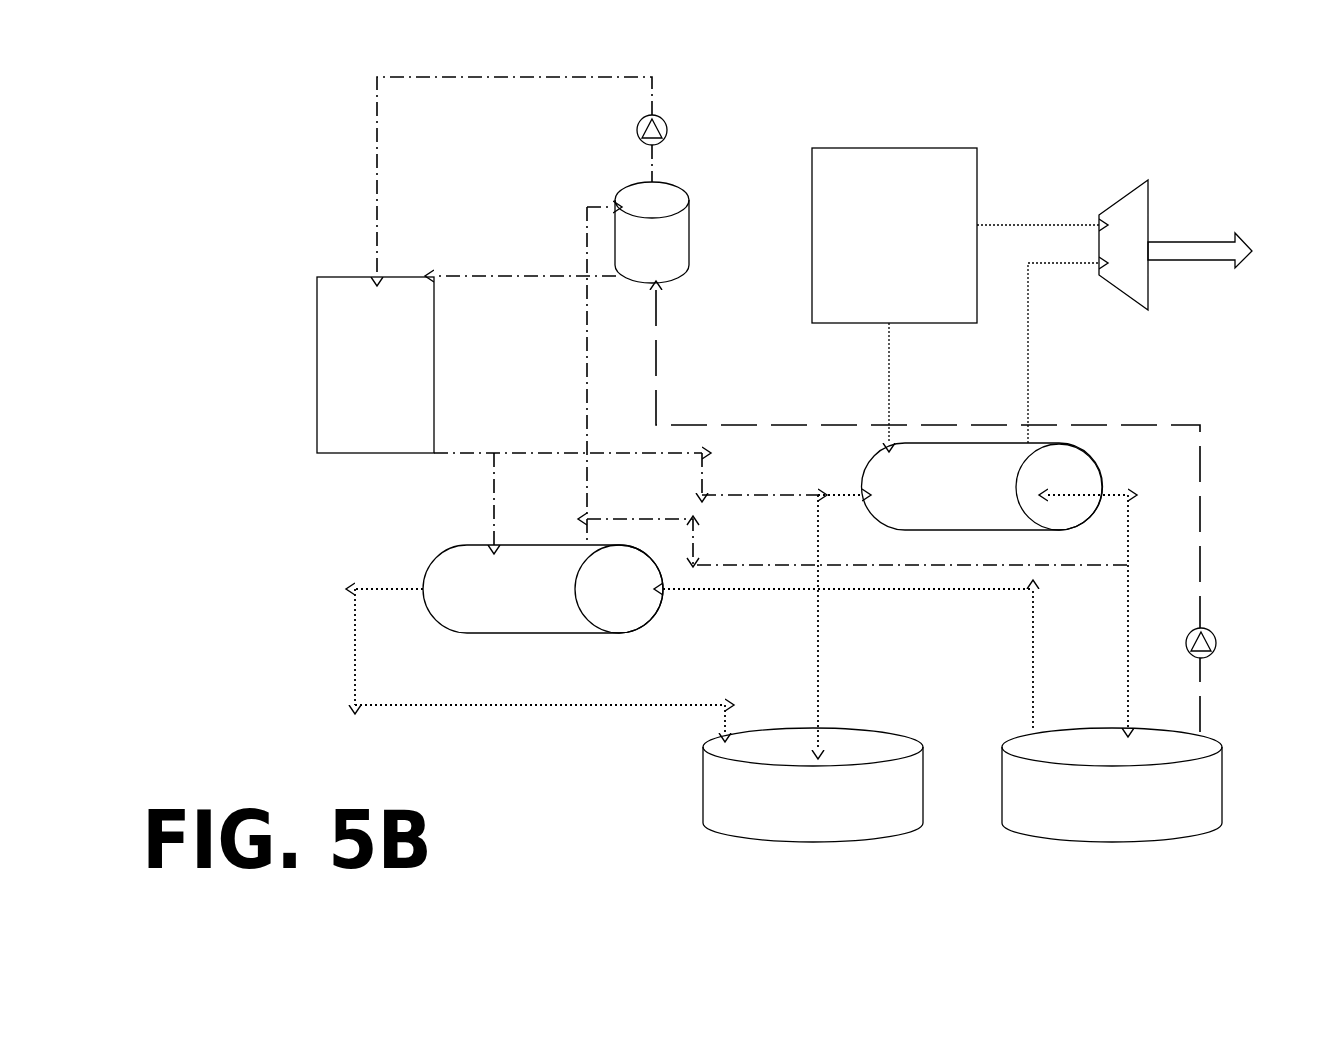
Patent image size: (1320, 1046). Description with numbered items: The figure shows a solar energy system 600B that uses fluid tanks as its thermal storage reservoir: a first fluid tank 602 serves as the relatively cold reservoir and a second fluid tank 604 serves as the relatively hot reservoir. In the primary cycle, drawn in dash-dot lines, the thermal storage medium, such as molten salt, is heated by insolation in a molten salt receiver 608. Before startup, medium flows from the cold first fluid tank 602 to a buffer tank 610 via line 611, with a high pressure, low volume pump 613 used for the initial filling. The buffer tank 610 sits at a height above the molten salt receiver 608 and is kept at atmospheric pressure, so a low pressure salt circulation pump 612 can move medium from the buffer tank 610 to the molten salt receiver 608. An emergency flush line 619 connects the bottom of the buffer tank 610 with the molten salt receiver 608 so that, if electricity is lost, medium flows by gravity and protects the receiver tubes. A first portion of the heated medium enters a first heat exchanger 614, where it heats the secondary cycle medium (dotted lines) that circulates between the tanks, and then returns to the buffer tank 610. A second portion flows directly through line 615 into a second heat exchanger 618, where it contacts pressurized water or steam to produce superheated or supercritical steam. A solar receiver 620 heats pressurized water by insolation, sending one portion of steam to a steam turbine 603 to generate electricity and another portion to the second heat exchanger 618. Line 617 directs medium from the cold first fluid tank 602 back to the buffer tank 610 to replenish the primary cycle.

The solar energy system 600B is at (308, 180).
The first fluid tank 602 is at (1203, 772).
The steam turbine 603 is at (1130, 200).
The second fluid tank 604 is at (733, 790).
The molten salt receiver 608 is at (350, 332).
The buffer tank 610 is at (638, 205).
The line 611 is at (928, 513).
The salt circulation pump 612 is at (668, 120).
The high pressure, low volume pump 613 is at (1210, 632).
The first heat exchanger 614 is at (452, 577).
The line 615 is at (626, 476).
The line 617 is at (857, 542).
The second heat exchanger 618 is at (1050, 472).
The emergency flush line 619 is at (525, 376).
The solar receiver 620 is at (910, 182).